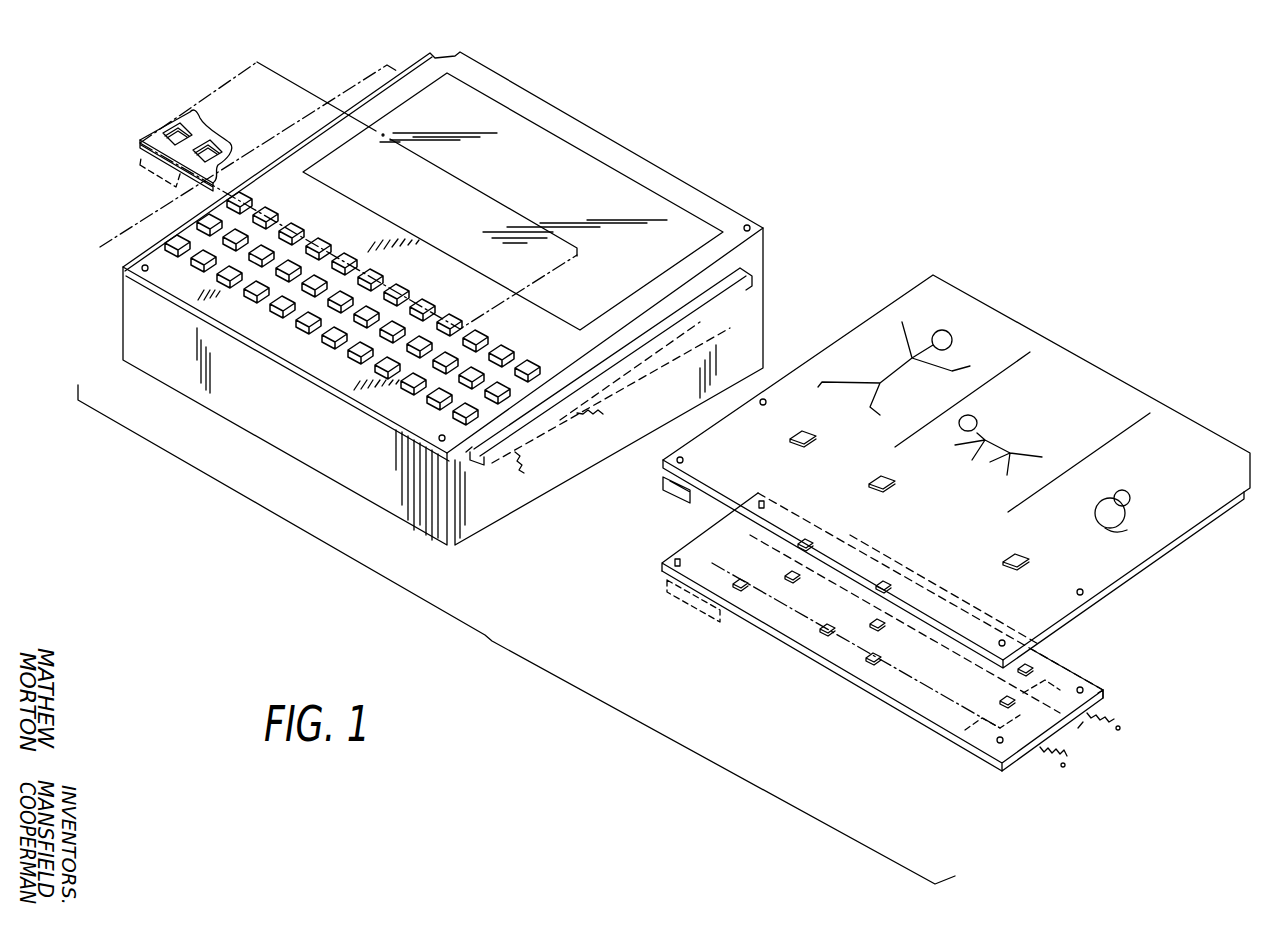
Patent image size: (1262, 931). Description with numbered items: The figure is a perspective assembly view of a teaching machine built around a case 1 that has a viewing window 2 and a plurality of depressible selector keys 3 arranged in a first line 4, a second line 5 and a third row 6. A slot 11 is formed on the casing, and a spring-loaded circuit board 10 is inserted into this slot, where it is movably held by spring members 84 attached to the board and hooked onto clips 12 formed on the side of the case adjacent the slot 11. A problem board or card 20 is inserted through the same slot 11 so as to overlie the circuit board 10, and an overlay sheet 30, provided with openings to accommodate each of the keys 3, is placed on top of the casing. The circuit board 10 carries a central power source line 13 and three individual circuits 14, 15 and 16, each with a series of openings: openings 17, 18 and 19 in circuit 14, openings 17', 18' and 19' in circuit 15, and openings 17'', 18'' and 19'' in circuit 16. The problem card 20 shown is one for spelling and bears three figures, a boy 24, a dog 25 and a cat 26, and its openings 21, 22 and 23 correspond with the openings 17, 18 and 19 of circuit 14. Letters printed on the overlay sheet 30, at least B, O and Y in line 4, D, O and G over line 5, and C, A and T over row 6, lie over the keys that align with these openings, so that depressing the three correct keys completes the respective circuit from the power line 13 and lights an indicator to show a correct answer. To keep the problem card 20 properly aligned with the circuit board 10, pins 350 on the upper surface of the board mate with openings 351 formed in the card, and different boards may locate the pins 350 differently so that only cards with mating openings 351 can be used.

The case 1 is at (104, 329).
The viewing window 2 is at (622, 192).
The depressible selector keys 3 is at (458, 412).
The first line of keys 4 is at (539, 362).
The second line of selector keys 5 is at (513, 395).
The third row of selector keys 6 is at (473, 462).
The spring-loaded circuit board 10 is at (660, 570).
The slot 11 is at (665, 324).
The clips 12 is at (571, 437).
The central power source line 13 is at (1090, 692).
The individual circuit 14 is at (1078, 728).
The individual circuit 15 is at (1060, 735).
The individual circuit 16 is at (937, 742).
The opening 17 is at (828, 529).
The opening 18 is at (900, 569).
The opening 19 is at (1056, 656).
The opening 17' is at (780, 582).
The opening 18' is at (863, 630).
The opening 19' is at (981, 695).
The opening 17'' is at (740, 618).
The opening 18'' is at (811, 661).
The opening 19'' is at (868, 690).
The problem board or card 20 is at (664, 496).
The opening 21 is at (792, 440).
The opening 22 is at (870, 484).
The opening 23 is at (1008, 562).
The figure of a boy 24 is at (900, 362).
The figure of a dog 25 is at (985, 440).
The figure of a cat 26 is at (1130, 495).
The overlay sheet 30 is at (170, 132).
The spring members 84 is at (1120, 727).
The pins 350 is at (1062, 705).
The openings 351 is at (1082, 598).